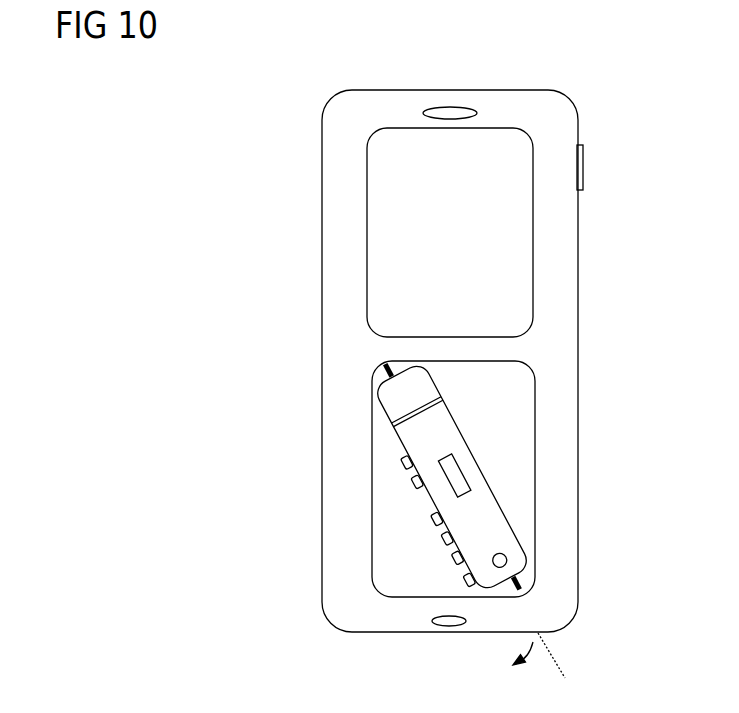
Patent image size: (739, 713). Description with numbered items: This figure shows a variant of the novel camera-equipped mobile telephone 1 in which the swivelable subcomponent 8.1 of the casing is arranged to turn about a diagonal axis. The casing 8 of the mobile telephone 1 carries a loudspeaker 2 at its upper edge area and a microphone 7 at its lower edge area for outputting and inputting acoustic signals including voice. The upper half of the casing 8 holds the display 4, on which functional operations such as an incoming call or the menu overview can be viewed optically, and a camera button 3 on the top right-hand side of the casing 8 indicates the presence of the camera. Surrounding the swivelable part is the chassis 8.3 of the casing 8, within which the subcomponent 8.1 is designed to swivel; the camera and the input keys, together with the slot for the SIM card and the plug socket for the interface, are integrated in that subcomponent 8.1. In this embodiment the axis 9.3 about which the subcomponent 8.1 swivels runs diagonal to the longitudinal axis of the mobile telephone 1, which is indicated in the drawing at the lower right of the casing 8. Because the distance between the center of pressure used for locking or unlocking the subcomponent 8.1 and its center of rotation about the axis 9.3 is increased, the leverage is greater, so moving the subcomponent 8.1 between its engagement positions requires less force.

The mobile telephone 1 is at (583, 85).
The loudspeaker 2 is at (451, 113).
The camera button 3 is at (583, 166).
The display of the mobile telephone 4 is at (463, 246).
The microphone 7 is at (449, 626).
The casing of the mobile telephone 8 is at (565, 212).
The swivelable subcomponent of the casing 8.1 is at (472, 408).
The chassis of the casing 8.3 is at (370, 634).
The swivel axis running diagonal to the longitudinal axis of the mobile telephone 9.3 is at (553, 657).